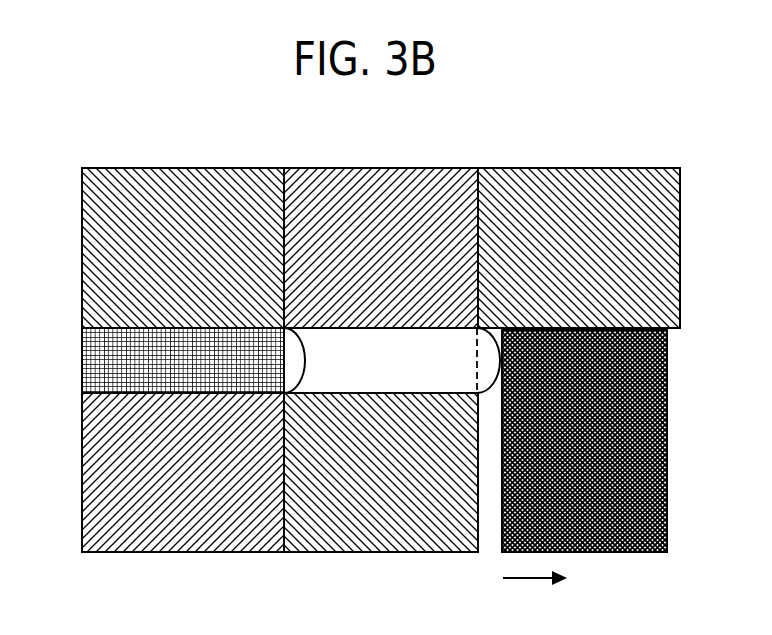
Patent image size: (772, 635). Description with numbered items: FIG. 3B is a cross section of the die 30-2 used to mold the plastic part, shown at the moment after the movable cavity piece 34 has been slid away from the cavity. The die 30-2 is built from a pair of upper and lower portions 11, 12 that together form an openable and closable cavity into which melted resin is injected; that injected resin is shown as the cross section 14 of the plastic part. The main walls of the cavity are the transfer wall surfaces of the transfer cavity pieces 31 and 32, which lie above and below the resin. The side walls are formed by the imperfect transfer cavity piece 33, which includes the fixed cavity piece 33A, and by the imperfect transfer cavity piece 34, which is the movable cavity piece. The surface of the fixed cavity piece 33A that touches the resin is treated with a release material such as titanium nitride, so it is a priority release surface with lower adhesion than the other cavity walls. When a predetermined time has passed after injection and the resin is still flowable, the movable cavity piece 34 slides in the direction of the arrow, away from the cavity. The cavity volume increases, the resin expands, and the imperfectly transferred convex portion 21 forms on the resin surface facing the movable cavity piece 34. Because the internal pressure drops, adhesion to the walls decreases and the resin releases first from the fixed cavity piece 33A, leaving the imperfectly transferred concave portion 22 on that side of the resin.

The die 30-2 is at (653, 132).
The first member 11 is at (411, 327).
The second member 12 is at (412, 396).
The cross section of the plastic part 14 is at (458, 360).
The imperfectly transferred convex portion 21 is at (492, 388).
The imperfectly transferred concave portion 22 is at (306, 362).
The transfer cavity piece 31 is at (332, 180).
The transfer cavity piece 32 is at (330, 540).
The imperfect transfer cavity piece 33 is at (108, 468).
The fixed cavity piece 33A is at (108, 362).
The movable cavity piece 34 is at (606, 540).